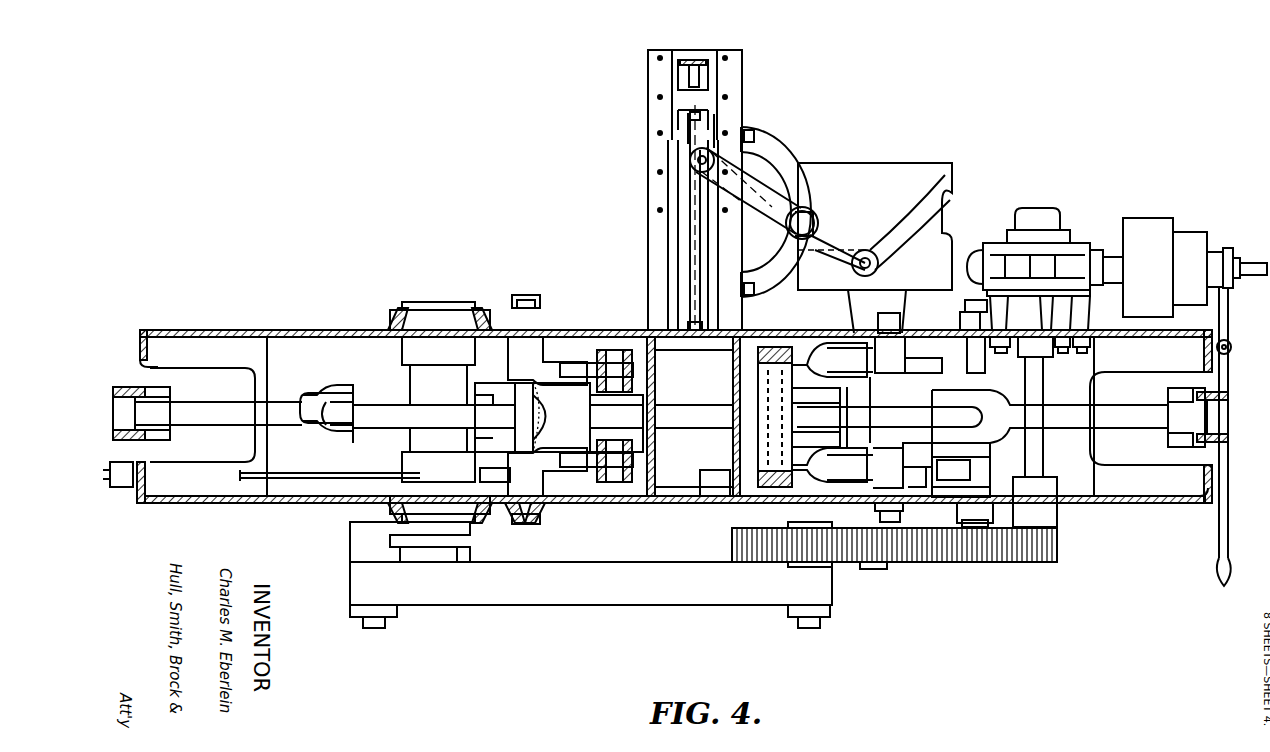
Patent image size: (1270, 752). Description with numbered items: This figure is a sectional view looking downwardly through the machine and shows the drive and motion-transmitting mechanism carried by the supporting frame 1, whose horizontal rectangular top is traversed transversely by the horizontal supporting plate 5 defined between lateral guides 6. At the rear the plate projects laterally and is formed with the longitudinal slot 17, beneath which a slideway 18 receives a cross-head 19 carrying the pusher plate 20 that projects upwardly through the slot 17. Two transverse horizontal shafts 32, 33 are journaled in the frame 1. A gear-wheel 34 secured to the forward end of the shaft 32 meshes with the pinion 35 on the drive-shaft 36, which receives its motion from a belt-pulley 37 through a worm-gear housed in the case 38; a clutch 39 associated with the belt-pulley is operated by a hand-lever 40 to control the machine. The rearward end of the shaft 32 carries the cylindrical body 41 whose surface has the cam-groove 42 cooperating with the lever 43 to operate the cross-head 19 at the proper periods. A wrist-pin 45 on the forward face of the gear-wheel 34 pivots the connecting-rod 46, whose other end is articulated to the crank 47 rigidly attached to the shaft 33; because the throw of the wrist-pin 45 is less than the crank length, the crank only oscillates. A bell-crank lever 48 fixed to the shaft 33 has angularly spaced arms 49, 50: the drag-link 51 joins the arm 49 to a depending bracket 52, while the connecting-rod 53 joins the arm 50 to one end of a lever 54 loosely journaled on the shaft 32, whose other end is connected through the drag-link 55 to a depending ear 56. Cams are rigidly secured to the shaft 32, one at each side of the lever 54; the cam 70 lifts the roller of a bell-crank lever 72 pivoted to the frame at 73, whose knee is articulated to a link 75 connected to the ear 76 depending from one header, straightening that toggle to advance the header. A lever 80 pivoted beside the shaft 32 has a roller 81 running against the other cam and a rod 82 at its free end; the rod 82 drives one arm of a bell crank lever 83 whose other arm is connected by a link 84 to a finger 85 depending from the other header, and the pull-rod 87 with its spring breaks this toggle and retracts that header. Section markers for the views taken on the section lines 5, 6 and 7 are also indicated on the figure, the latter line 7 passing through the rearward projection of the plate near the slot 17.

The supporting frame 1 is at (296, 500).
The horizontal supporting plate 5 is at (135, 490).
The lateral guides 6 is at (880, 103).
The section line 7- 7 is at (701, 40).
The longitudinal slot 17 is at (697, 237).
The slideway 18 is at (668, 160).
The cross-head 19 is at (668, 98).
The pusher plate 20 is at (677, 65).
The transverse horizontal shaft 32 is at (882, 570).
The transverse horizontal shaft 33 is at (455, 560).
The gear-wheel 34 is at (978, 565).
The pinion 35 is at (1060, 550).
The drive-shaft 36 is at (1045, 465).
The belt-pulley 37 is at (1138, 267).
The case 38 is at (1075, 240).
The clutch 39 is at (1220, 268).
The hand-lever 40 is at (1232, 334).
The cylindrical body 41 is at (905, 170).
The cam-groove 42 is at (907, 190).
The lever 43 is at (780, 220).
The wrist-pin 45 is at (800, 622).
The connecting-rod 46 is at (566, 605).
The crank 47 is at (416, 553).
The bell-crank lever 48 is at (398, 401).
The arm 49 is at (323, 398).
The arm 50 is at (490, 402).
The drag-link 51 is at (208, 410).
The depending bracket 52 is at (135, 387).
The connecting-rod 53 is at (685, 428).
The lever 54 is at (913, 405).
The drag-link 55 is at (1058, 407).
The ear 56 is at (1223, 396).
The cam 70 is at (930, 365).
The bell-crank lever 72 is at (848, 347).
The pivot 73 is at (907, 345).
The link 75 is at (797, 352).
The ear 76 is at (733, 360).
The lever 80 is at (988, 470).
The roller 81 is at (915, 430).
The rod 82 is at (713, 478).
The bell crank lever 83 is at (544, 379).
The link 84 is at (590, 363).
The finger 85 is at (632, 357).
The pull-rod 87 is at (291, 473).